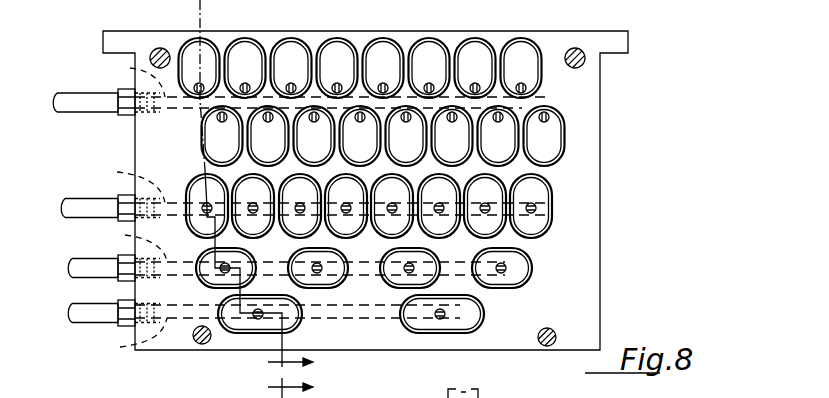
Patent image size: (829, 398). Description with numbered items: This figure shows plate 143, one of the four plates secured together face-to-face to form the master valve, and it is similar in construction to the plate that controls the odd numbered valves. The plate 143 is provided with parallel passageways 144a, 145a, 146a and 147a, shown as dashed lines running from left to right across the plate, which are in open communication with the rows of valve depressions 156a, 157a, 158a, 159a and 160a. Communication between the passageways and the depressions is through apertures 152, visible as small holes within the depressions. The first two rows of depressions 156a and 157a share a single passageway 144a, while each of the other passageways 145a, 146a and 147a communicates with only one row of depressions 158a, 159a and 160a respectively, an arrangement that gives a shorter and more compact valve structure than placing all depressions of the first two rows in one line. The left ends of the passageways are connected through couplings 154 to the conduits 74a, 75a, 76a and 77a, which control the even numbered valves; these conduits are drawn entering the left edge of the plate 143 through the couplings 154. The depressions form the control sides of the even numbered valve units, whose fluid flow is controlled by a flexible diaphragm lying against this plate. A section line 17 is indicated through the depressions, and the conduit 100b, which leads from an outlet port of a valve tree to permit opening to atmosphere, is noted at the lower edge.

The plate 143 is at (601, 252).
The conduit 74a is at (90, 112).
The conduit 75a is at (72, 208).
The conduit 76a is at (80, 270).
The conduit 77a is at (85, 315).
The coupling 154 is at (127, 115).
The passageway 144a is at (320, 84).
The passageway 145a is at (314, 189).
The passageway 146a is at (298, 250).
The passageway 147a is at (273, 331).
The valve depressions 156a is at (537, 82).
The valve depressions 157a is at (557, 147).
The valve depressions 158a is at (545, 218).
The valve depressions 159a is at (530, 280).
The valve depressions 160a is at (470, 324).
The apertures 152 is at (530, 206).
The section line 17- 17 is at (545, 0).
The conduit 100b is at (443, 390).